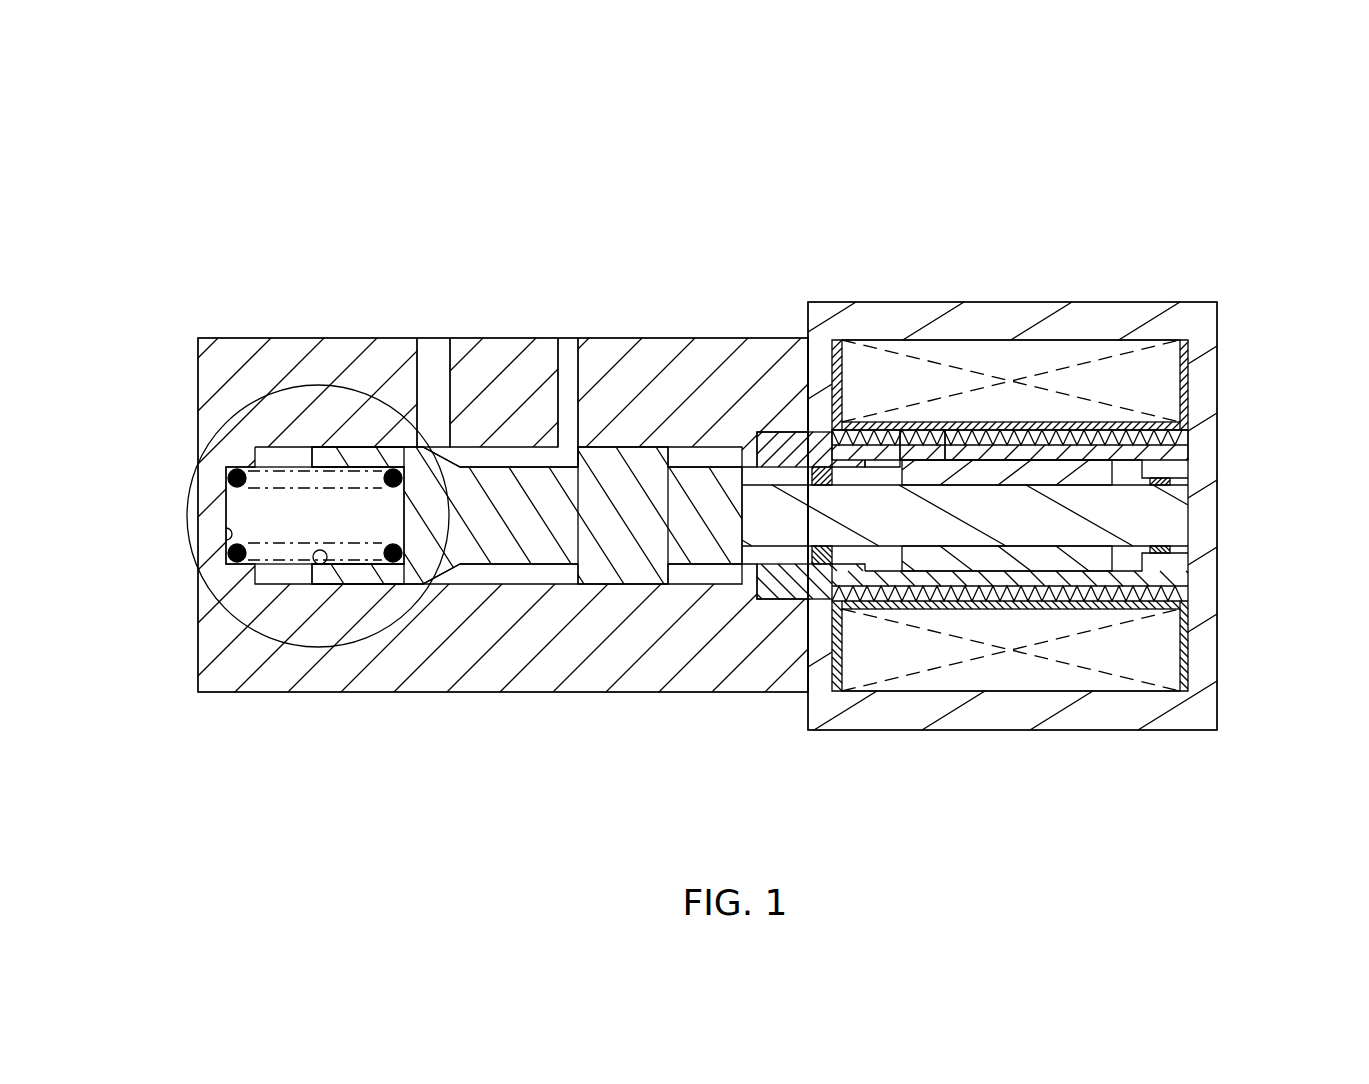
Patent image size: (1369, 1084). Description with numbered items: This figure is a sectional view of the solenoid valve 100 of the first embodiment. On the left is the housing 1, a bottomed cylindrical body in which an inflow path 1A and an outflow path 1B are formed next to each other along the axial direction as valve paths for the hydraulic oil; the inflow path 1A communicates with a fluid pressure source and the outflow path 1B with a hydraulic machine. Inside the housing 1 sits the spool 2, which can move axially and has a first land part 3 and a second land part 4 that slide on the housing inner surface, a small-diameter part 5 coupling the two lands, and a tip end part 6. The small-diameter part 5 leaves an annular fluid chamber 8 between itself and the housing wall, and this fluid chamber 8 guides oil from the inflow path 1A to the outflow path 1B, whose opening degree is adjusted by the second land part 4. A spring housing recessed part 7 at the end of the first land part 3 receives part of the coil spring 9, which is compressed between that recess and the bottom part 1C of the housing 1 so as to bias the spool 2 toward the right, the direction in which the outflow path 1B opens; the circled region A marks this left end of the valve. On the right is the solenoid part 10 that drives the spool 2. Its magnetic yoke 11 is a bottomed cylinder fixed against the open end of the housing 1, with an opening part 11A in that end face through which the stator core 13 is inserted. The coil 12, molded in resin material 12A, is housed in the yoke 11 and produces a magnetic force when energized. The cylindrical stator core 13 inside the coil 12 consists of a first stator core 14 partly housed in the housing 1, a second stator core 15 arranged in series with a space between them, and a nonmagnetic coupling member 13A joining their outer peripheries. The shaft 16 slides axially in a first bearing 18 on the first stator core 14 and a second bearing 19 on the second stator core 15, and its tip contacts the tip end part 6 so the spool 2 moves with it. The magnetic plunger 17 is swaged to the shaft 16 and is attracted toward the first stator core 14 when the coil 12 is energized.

The solenoid valve 100 is at (1253, 188).
The solenoid part 10 is at (1143, 275).
The housing 1 is at (356, 338).
The inflow path 1A is at (434, 358).
The outflow path 1B is at (566, 358).
The bottom part 1C is at (226, 540).
The enlarged region A is at (305, 383).
The spool 2 is at (537, 563).
The first land part 3 is at (345, 580).
The second land part 4 is at (615, 575).
The small-diameter part 5 is at (485, 553).
The tip end part 6 is at (715, 553).
The spring housing recessed part 7 is at (320, 565).
The fluid chamber 8 is at (510, 457).
The coil spring 9 is at (235, 567).
The yoke 11 is at (1073, 325).
The opening part 11A is at (808, 432).
The coil 12 is at (1160, 388).
The resin material 12A is at (1190, 350).
The stator core 13 is at (1000, 247).
The coupling member 13A is at (918, 440).
The first stator core 14 is at (875, 442).
The second stator core 15 is at (968, 440).
The shaft 16 is at (1160, 525).
The plunger 17 is at (1020, 560).
The first bearing 18 is at (822, 565).
The second bearing 19 is at (1160, 555).